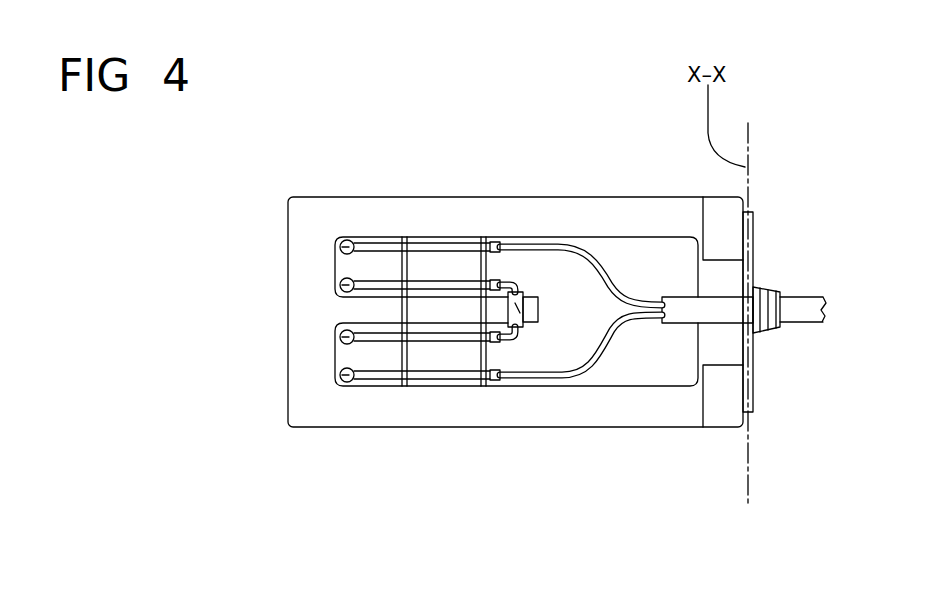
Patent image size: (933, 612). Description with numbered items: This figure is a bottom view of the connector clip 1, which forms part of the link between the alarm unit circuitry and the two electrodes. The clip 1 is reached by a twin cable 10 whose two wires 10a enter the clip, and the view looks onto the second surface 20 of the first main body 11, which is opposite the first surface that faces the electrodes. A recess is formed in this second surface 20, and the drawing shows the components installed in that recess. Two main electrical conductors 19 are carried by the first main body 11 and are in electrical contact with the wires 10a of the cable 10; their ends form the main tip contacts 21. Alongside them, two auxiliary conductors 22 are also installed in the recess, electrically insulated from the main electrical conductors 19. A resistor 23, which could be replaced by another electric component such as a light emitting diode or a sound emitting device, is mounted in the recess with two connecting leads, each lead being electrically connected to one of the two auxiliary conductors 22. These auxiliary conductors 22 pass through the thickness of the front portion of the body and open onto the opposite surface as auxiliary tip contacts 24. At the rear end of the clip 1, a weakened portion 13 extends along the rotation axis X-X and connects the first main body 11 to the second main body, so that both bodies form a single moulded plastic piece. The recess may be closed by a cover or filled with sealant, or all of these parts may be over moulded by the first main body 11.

The connector clip 1 is at (520, 308).
The twin cable 10 is at (793, 332).
The wires 10a is at (551, 245).
The first main body 11 is at (514, 188).
The weakened portion 13 is at (753, 243).
The main electrical conductors 19 is at (450, 245).
The second surface 20 is at (587, 215).
The main tip contacts 21 is at (340, 247).
The auxiliary conductors 22 is at (396, 240).
The resistor 23 is at (527, 328).
The auxiliary tip contacts 24 is at (340, 337).